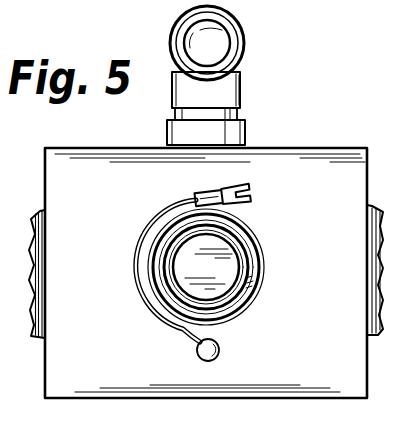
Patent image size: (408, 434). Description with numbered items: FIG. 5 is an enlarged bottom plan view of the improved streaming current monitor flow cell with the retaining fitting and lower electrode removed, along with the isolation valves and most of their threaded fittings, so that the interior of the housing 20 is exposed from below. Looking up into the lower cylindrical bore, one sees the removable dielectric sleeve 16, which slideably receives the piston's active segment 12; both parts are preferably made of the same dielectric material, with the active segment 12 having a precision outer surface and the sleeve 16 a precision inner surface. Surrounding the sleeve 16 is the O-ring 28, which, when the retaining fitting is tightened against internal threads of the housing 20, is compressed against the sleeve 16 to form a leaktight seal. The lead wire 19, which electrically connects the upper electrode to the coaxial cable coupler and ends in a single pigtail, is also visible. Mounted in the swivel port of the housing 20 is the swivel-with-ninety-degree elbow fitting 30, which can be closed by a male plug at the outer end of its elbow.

The active segment 12 is at (231, 266).
The sleeve 16 is at (246, 271).
The lead wire 19 is at (143, 277).
The housing 20 is at (263, 177).
The O-ring 28 is at (253, 305).
The swivel-with-90 degree elbow fitting 30 is at (213, 48).